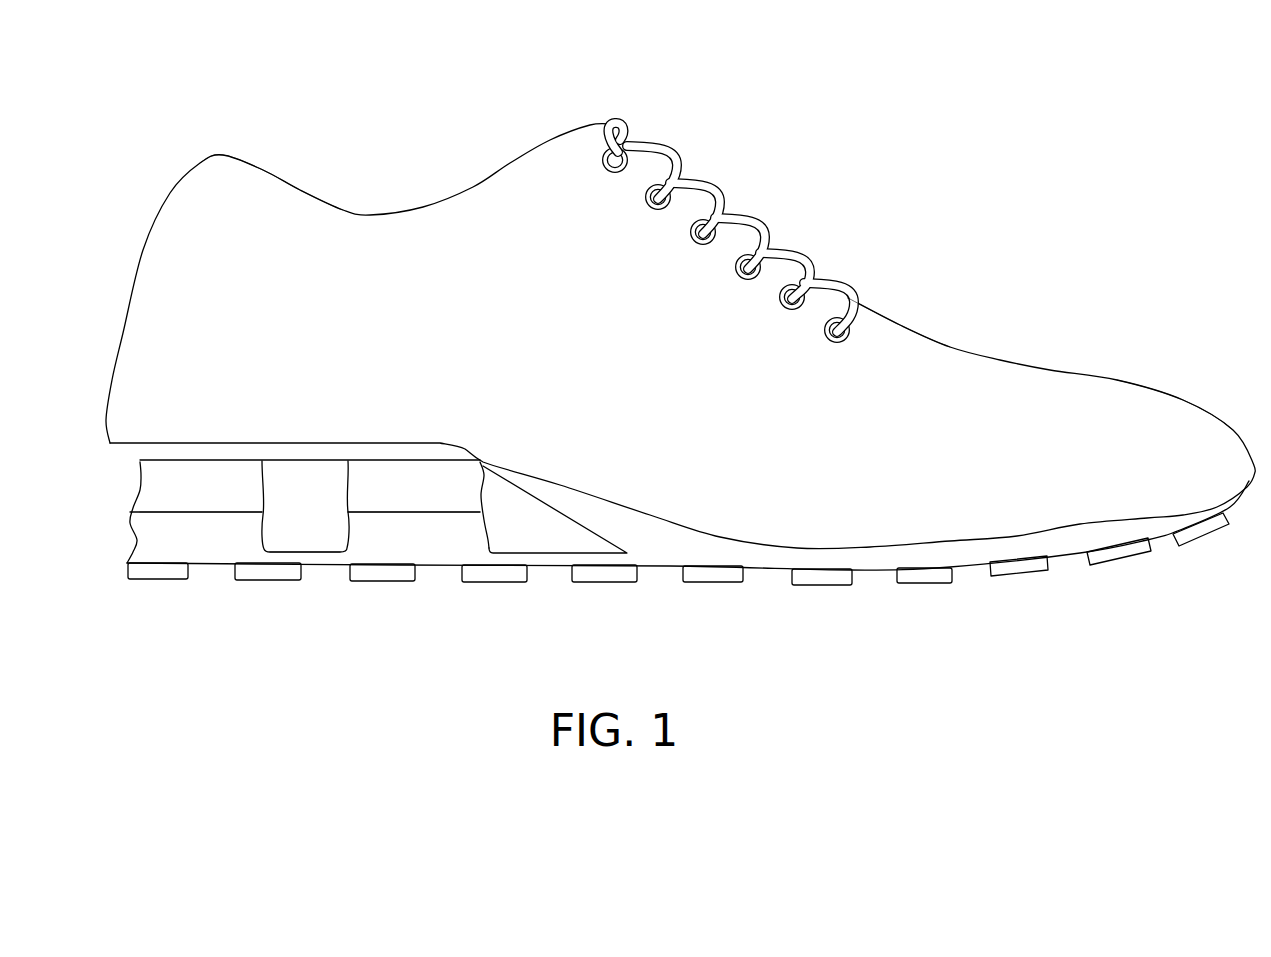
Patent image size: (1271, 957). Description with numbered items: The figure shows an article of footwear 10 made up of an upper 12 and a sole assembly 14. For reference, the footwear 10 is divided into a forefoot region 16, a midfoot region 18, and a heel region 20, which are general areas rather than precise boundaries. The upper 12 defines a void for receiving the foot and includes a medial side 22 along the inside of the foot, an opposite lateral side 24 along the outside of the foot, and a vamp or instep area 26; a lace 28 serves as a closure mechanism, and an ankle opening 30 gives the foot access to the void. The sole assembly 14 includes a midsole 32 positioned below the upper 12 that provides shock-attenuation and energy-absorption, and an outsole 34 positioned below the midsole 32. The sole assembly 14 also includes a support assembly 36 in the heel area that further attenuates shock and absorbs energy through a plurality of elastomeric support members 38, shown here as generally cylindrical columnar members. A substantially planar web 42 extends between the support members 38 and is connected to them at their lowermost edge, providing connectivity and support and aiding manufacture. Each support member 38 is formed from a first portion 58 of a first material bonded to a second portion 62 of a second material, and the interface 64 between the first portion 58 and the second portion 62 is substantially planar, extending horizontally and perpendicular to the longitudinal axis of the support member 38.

The article of footwear 10 is at (944, 142).
The upper 12 is at (475, 260).
The sole assembly 14 is at (97, 483).
The forefoot region 16 is at (1059, 459).
The midfoot region 18 is at (630, 378).
The heel region 20 is at (247, 334).
The medial side 22 is at (1117, 378).
The lateral side 24 is at (878, 500).
The vamp or instep area 26 is at (882, 340).
The lace 28 is at (673, 163).
The ankle opening 30 is at (298, 190).
The midsole 32 is at (652, 523).
The outsole 34 is at (715, 583).
The support assembly 36 is at (126, 523).
The support members 38 is at (348, 482).
The web 42 is at (313, 557).
The first portions 58 is at (207, 540).
The second portions 62 is at (183, 475).
The interface 64 is at (182, 510).